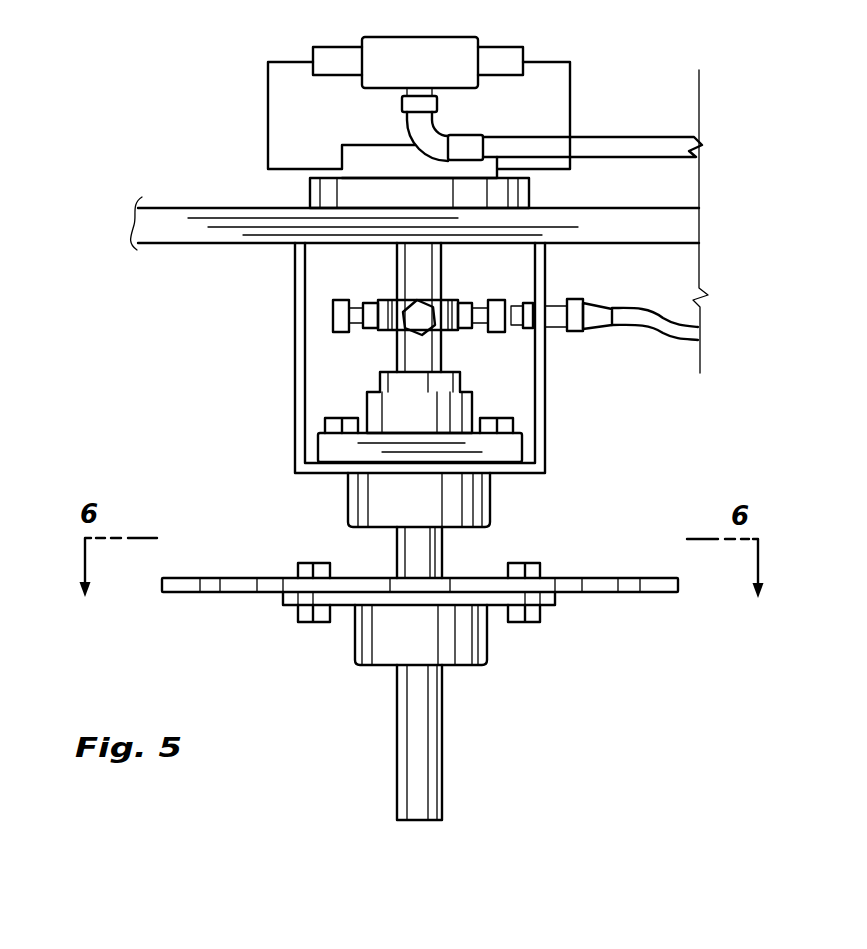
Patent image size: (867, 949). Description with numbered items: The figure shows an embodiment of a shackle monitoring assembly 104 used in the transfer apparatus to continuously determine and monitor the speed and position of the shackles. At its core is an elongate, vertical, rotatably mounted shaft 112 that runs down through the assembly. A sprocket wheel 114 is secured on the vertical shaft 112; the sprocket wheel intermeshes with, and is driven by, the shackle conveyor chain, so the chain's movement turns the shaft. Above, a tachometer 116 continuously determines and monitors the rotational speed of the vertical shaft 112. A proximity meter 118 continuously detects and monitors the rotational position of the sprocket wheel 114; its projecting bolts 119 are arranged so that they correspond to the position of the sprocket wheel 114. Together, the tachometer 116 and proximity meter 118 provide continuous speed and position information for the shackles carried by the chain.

The shackle monitoring assembly 104 is at (240, 149).
The tachometer 116 is at (523, 88).
The projecting bolts 119 is at (340, 302).
The proximity meter 118 is at (510, 327).
The vertical shaft 112 is at (443, 553).
The sprocket wheel 114 is at (597, 595).